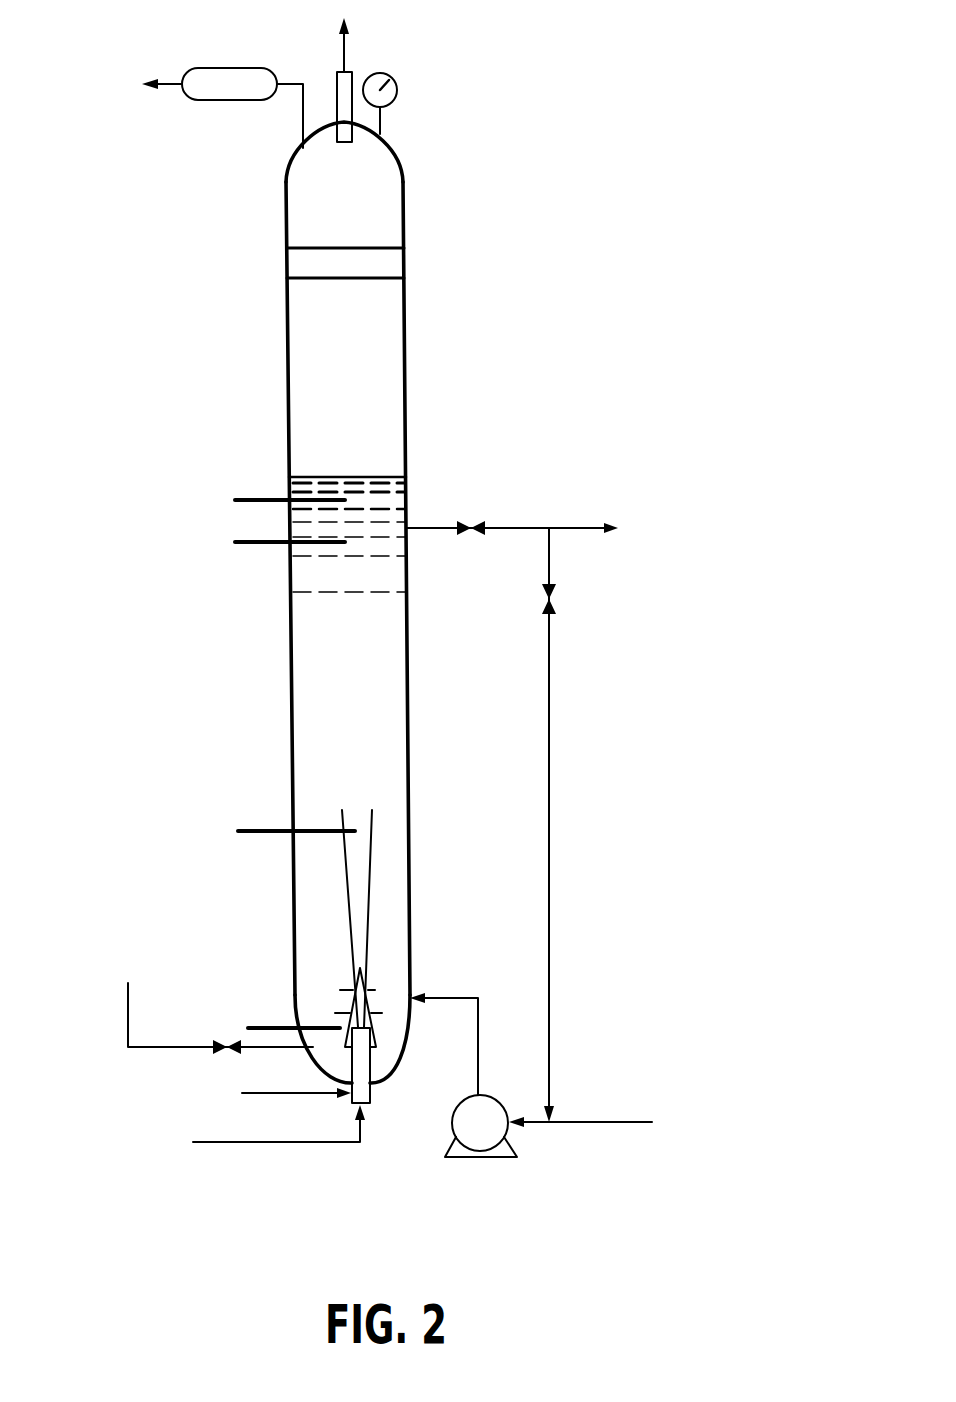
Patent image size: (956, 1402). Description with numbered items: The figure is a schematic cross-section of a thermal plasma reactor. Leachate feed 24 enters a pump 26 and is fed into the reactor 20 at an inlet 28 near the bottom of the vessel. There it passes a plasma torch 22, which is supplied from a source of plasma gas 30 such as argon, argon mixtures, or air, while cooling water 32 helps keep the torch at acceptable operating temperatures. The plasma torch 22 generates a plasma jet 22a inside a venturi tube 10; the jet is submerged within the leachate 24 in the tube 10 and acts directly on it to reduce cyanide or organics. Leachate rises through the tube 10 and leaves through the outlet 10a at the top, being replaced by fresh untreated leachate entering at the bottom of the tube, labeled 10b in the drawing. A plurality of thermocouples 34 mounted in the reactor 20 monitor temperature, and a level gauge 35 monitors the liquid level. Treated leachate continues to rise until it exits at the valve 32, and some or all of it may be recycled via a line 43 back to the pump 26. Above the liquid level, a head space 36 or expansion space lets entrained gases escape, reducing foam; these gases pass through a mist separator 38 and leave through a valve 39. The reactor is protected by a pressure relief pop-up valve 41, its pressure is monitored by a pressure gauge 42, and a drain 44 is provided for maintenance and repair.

The tube 10 is at (368, 875).
The outlet 10a is at (357, 812).
The nozzle lower end 10b is at (343, 1063).
The reactor 20 is at (408, 710).
The plasma torch 22 is at (363, 1095).
The plasma jet 22a is at (360, 1007).
The leachate feed 24 is at (368, 678).
The pump 26 is at (483, 1133).
The inlet 28 is at (417, 997).
The source of plasma gas 30 is at (275, 1143).
The cooling water 32 is at (435, 528).
The thermocouples 34 is at (253, 545).
The level gauge 35 is at (266, 500).
The head space 36 is at (367, 420).
The mist separator 38 is at (390, 265).
The valve 39 is at (232, 96).
The pressure relief pop-up valve 41 is at (352, 72).
The pressure gauge 42 is at (397, 89).
The line 43 is at (548, 718).
The drain 44 is at (128, 1035).